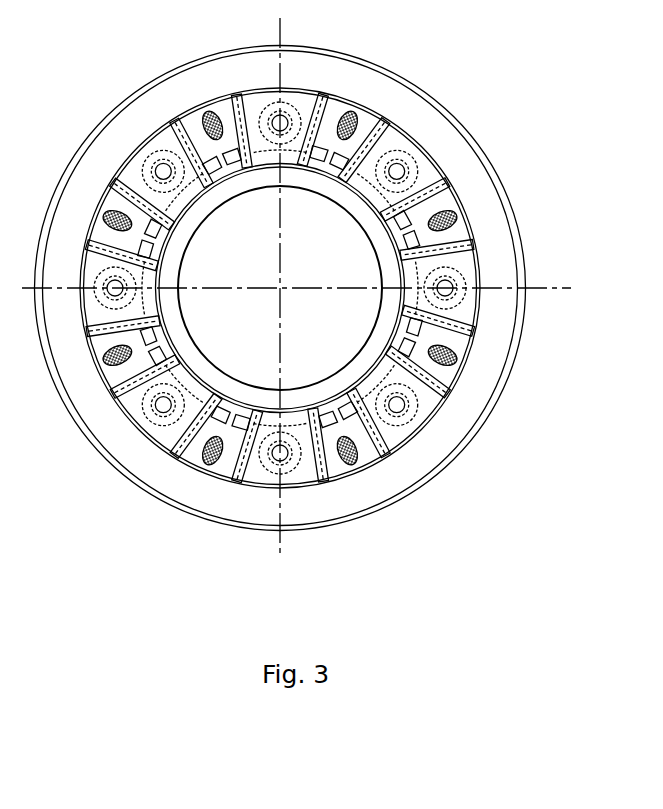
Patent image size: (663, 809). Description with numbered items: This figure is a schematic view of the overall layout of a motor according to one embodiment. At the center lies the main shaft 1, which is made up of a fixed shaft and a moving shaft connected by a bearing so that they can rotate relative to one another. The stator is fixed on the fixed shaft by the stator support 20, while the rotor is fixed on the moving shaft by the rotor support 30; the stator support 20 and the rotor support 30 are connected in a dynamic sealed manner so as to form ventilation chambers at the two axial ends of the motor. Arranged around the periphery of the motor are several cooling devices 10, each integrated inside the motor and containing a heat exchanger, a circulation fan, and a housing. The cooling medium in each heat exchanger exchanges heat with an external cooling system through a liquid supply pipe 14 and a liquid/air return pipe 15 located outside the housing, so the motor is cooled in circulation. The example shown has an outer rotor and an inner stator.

The main shaft 1 is at (382, 288).
The cooling device 10 is at (414, 157).
The liquid supply pipe 14 is at (446, 184).
The liquid/air return pipe 15 is at (437, 203).
The stator support 20 is at (460, 218).
The rotor support 30 is at (410, 76).